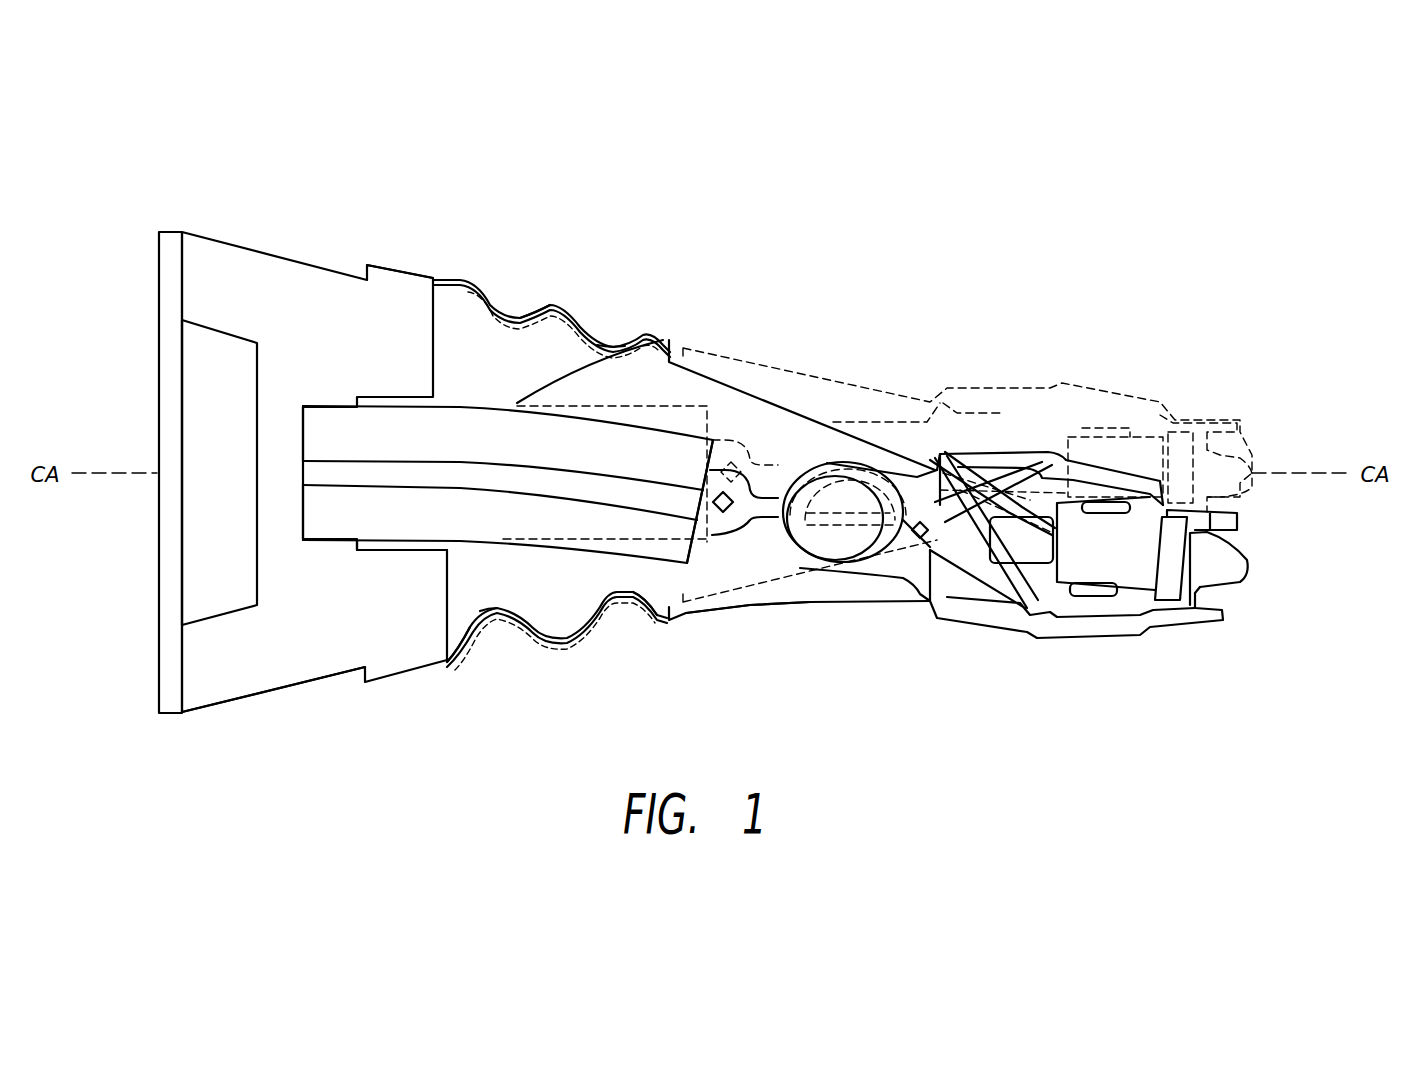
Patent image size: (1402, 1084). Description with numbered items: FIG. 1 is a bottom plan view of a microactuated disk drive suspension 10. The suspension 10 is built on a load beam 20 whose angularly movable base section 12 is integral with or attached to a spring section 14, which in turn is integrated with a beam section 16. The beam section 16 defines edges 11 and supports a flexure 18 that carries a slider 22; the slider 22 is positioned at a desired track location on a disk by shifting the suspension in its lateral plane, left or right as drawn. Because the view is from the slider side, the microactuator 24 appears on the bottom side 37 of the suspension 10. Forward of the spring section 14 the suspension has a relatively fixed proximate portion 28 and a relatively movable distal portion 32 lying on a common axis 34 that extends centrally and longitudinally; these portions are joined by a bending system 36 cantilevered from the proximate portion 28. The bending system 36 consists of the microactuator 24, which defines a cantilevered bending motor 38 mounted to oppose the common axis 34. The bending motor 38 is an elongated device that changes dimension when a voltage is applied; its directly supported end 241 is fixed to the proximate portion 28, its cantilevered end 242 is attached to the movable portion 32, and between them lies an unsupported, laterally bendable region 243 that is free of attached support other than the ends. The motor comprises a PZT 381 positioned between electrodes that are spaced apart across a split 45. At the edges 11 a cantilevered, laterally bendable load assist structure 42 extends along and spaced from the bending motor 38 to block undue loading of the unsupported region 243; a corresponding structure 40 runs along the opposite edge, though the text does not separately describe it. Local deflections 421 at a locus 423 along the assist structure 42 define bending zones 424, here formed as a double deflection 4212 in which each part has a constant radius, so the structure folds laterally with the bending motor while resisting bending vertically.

The microactuated suspension 10 is at (1220, 322).
The edges 11 is at (423, 268).
The base section 12 is at (158, 447).
The spring section 14 is at (258, 698).
The beam section 16 is at (777, 612).
The flexure 18 is at (987, 625).
The load beam 20 is at (723, 353).
The slider 22 is at (1123, 580).
The microactuator 24 is at (576, 469).
The relatively fixed suspension portion 28 is at (290, 258).
The relatively movable suspension portion 32 is at (763, 393).
The common axis 34 is at (832, 420).
The bending system 36 is at (727, 325).
The bottom side 37 is at (780, 417).
The bending motor 38 is at (404, 529).
The lower bellows 40 is at (580, 583).
The load assist structure 42 is at (646, 304).
The split 45 is at (358, 460).
The directly supported end 241 is at (322, 427).
The cantilevered end 242 is at (685, 567).
The unsupported bendable region 243 is at (663, 340).
The PZT 381 is at (337, 542).
The local deflections 421 is at (510, 310).
The locus 423 is at (492, 645).
The bending zones 424 is at (652, 645).
The double deflection 4212 is at (615, 332).